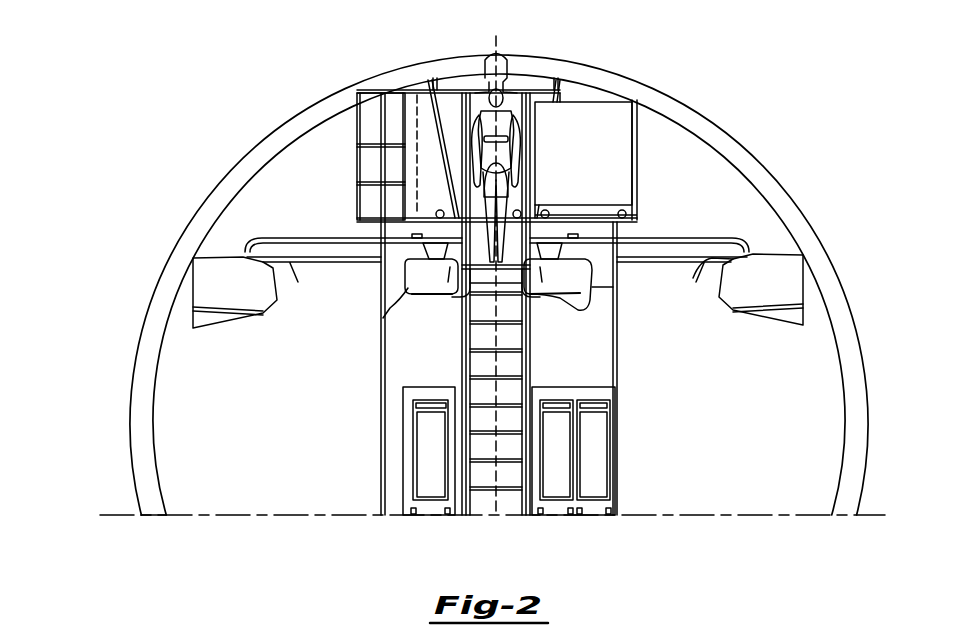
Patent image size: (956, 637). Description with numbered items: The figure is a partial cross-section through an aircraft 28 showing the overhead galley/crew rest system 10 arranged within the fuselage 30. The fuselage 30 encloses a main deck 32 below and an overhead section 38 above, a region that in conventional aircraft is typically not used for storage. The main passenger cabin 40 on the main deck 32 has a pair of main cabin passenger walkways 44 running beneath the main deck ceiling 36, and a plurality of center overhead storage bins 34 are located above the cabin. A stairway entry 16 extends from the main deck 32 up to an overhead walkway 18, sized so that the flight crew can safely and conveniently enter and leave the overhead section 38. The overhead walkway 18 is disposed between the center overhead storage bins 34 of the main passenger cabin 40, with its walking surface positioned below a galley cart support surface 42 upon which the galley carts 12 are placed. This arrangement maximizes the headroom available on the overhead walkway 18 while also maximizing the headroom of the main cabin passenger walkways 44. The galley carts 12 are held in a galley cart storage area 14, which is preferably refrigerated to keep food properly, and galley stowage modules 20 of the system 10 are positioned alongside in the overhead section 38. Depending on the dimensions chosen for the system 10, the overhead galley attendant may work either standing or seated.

The overhead galley/crew rest system 10 is at (608, 56).
The galley carts 12 is at (620, 131).
The galley cart storage area 14 is at (648, 159).
The stairway entry 16 is at (518, 390).
The overhead walkway 18 is at (451, 291).
The galley stowage modules 20 is at (368, 160).
The aircraft 28 is at (763, 170).
The fuselage 30 is at (320, 99).
The main deck 32 is at (215, 515).
The center overhead storage bins 34 is at (412, 316).
The main deck ceiling 36 is at (356, 243).
The overhead section 38 is at (250, 200).
The main passenger cabin 40 is at (250, 396).
The galley cart support surface 42 is at (590, 243).
The main cabin passenger walkways 44 is at (348, 515).